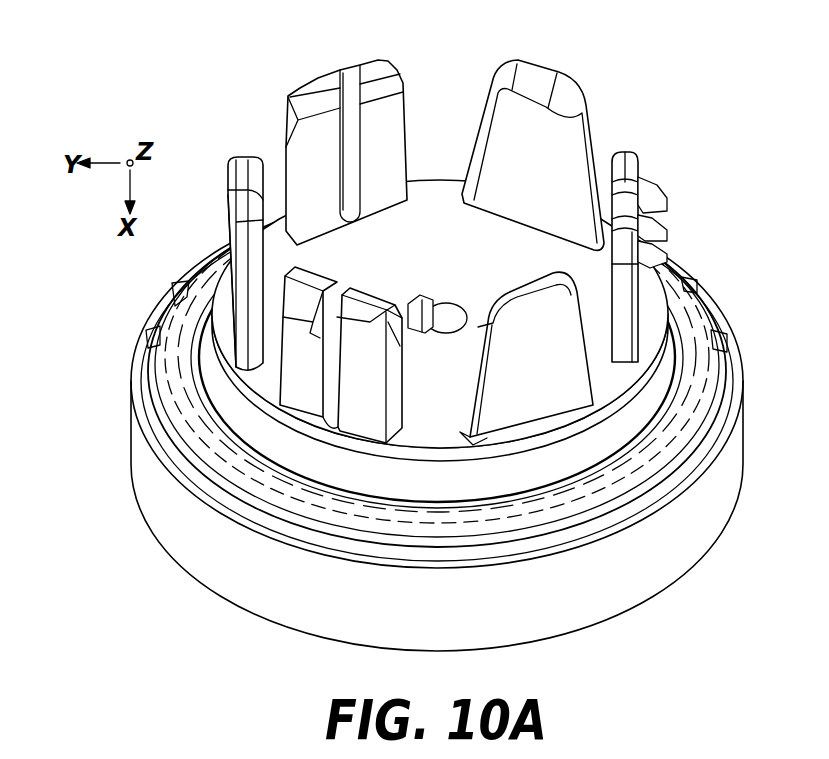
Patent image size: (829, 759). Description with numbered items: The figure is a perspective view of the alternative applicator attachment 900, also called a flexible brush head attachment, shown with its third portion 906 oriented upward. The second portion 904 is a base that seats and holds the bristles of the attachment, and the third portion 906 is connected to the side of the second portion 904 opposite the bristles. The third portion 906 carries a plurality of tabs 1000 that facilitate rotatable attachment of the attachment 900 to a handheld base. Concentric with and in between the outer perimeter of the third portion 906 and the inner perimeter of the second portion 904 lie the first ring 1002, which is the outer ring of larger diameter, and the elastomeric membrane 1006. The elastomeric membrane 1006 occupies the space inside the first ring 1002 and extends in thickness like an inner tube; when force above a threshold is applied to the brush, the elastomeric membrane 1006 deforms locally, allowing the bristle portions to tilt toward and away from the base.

The alternative applicator attachment 900 is at (93, 434).
The second portion 904 is at (663, 563).
The third portion 906 is at (545, 73).
The tabs 1000 is at (312, 85).
The first ring 1002 is at (673, 280).
The elastomeric membrane 1006 is at (680, 343).